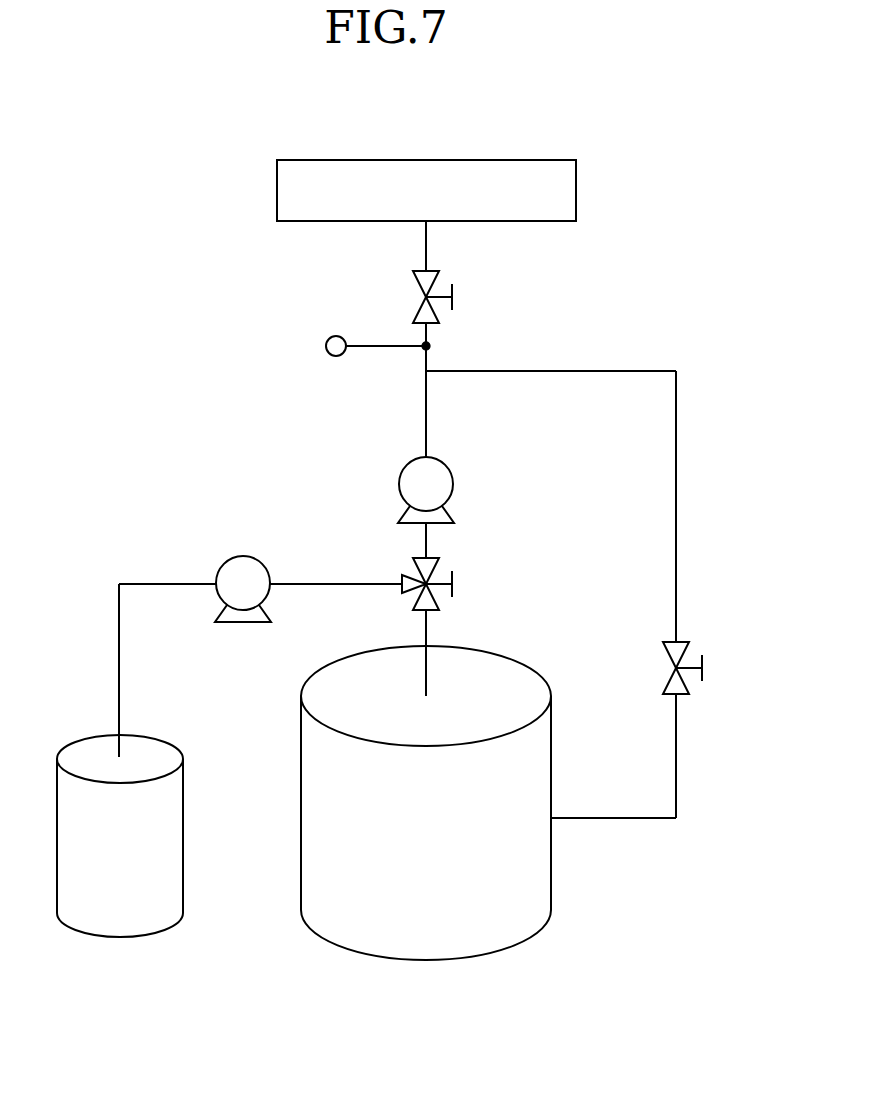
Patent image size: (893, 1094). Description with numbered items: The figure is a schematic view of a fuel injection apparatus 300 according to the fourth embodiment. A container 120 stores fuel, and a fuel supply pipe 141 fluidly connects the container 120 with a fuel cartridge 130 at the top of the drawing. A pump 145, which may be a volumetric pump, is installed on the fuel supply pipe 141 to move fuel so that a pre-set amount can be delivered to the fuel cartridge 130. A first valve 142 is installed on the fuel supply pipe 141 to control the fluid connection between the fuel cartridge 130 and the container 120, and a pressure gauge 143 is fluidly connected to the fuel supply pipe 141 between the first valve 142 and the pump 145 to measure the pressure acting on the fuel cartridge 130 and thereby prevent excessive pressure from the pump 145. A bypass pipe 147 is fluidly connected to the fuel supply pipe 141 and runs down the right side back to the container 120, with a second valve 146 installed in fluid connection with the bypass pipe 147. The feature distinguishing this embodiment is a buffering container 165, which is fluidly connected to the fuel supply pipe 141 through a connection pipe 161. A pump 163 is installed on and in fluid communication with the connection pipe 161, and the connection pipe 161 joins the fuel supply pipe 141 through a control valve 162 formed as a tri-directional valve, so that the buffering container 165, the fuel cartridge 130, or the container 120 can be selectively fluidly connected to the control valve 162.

The fuel injection apparatus 300 is at (421, 126).
The fuel cartridge 130 is at (576, 190).
The fuel supply pipe 141 is at (426, 414).
The first valve 142 is at (418, 287).
The pressure gauge 143 is at (326, 346).
The pump 145 is at (399, 484).
The control valve 162 is at (433, 560).
The pump 163 is at (243, 556).
The connection pipe 161 is at (155, 583).
The buffering container 165 is at (157, 864).
The container 120 is at (322, 800).
The bypass pipe 147 is at (676, 488).
The second valve 146 is at (665, 657).